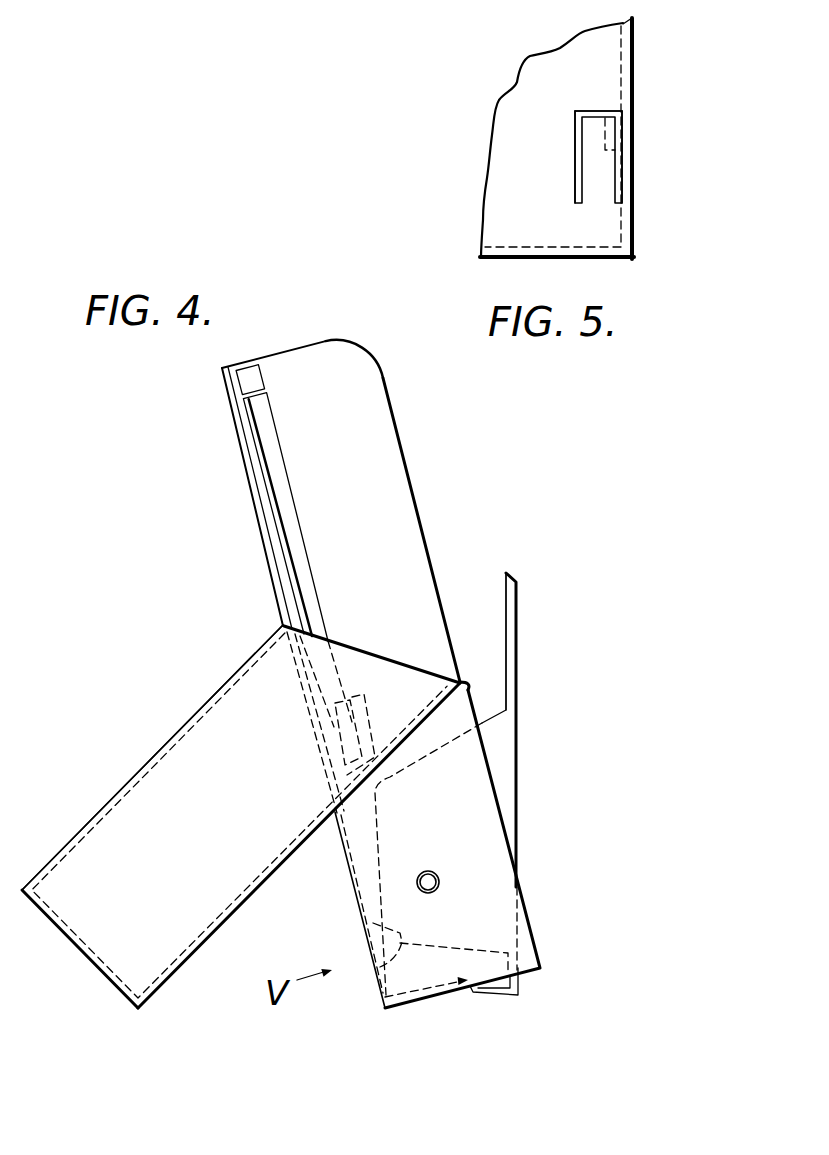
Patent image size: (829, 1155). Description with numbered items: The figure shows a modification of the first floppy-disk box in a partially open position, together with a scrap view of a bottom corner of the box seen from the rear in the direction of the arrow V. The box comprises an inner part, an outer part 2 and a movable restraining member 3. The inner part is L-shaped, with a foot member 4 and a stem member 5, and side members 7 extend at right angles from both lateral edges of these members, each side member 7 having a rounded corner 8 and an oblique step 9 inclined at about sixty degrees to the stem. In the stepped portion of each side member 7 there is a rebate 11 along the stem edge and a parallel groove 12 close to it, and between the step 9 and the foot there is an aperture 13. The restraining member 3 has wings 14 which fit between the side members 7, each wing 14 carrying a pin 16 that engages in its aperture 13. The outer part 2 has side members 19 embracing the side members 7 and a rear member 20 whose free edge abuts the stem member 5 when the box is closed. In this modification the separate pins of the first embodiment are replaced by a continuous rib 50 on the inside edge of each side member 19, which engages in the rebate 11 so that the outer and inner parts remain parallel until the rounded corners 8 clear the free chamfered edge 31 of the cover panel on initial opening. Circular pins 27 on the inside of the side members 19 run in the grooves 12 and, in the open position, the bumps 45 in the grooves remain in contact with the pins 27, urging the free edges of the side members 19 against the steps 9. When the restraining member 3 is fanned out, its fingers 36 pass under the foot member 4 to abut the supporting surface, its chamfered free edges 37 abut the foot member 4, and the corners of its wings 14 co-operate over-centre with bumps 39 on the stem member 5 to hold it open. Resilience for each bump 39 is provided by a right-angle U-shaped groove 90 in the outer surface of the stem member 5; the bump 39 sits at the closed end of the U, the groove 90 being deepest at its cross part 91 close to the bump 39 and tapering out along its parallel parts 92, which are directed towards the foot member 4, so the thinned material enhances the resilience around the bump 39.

In FIG. 4, the outer part 2 is at (152, 736).
In FIG. 4, the restraining member 3 is at (530, 695).
In FIG. 5, the foot member 4 is at (490, 262).
In FIG. 5, the stem member 5 is at (510, 210).
In FIG. 4, the side member 7 is at (298, 380).
In FIG. 4, the rounded corner 8 is at (357, 342).
In FIG. 4, the oblique step 9 is at (425, 718).
In FIG. 4, the rebate 11 is at (250, 469).
In FIG. 4, the groove 12 is at (280, 512).
In FIG. 4, the aperture 13 is at (440, 888).
In FIG. 4, the wing 14 is at (497, 770).
In FIG. 4, the pin 16 is at (437, 877).
In FIG. 4, the side member 19 is at (158, 802).
In FIG. 4, the rear member 20 is at (70, 947).
In FIG. 4, the circular pin 27 is at (337, 755).
In FIG. 4, the chamfered free edge 31 is at (282, 625).
In FIG. 4, the finger 36 is at (507, 997).
In FIG. 4, the chamfered free edge 37 is at (483, 995).
In FIG. 4, the bump 39 is at (378, 968).
In FIG. 5, the bump 39 is at (608, 140).
In FIG. 4, the bump 45 is at (333, 730).
In FIG. 4, the continuous rib 50 is at (273, 878).
In FIG. 5, the U-shaped groove 90 is at (640, 107).
In FIG. 5, the cross part 91 is at (598, 111).
In FIG. 5, the parallel part 92 is at (575, 176).